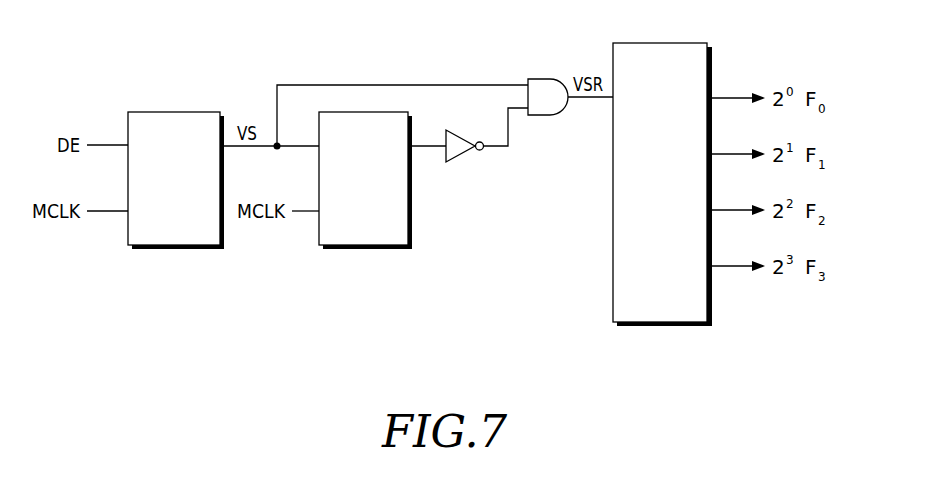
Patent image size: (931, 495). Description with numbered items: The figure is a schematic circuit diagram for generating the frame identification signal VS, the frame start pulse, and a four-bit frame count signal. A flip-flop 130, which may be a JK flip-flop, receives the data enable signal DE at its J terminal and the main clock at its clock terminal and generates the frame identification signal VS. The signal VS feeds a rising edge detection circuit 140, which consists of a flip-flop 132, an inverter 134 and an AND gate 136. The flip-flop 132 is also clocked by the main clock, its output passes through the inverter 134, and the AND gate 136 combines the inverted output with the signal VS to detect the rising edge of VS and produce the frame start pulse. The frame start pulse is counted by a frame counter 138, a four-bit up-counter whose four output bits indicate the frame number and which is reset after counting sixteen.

The flip-flop 130 is at (178, 249).
The flip-flop 132 is at (370, 249).
The inverter 134 is at (472, 128).
The AND gate 136 is at (537, 78).
The frame counter 138 is at (659, 43).
The rising edge detection circuit 140 is at (418, 68).